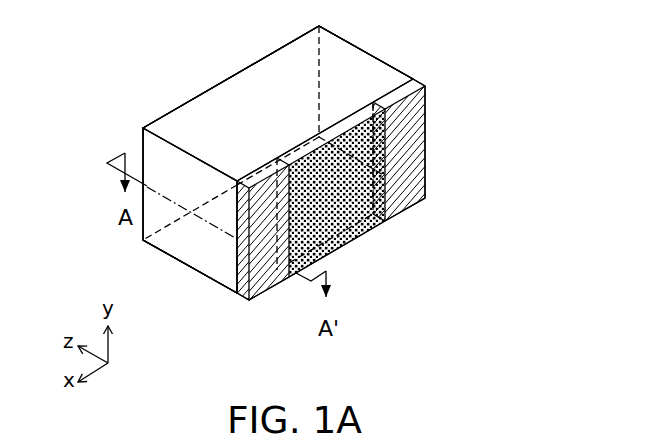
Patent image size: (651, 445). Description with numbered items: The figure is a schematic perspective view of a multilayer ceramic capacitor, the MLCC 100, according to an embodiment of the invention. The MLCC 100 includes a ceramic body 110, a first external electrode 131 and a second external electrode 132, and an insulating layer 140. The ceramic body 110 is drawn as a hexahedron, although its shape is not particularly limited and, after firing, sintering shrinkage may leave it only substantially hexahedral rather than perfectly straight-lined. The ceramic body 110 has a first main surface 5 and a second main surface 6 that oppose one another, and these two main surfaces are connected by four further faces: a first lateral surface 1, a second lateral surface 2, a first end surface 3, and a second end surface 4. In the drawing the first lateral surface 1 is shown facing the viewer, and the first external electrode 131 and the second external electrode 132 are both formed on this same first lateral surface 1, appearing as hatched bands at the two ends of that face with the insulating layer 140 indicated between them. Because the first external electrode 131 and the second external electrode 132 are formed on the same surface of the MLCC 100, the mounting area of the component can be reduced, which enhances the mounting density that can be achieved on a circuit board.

The MLCC 100 is at (82, 43).
The ceramic body 110 is at (141, 146).
The first lateral surface 1 is at (357, 219).
The second lateral surface 2 is at (192, 128).
The first end surface 3 is at (174, 240).
The second end surface 4 is at (352, 68).
The first main surface 5 is at (260, 84).
The second main surface 6 is at (222, 258).
The first external electrode 131 is at (260, 285).
The second external electrode 132 is at (424, 170).
The insulating layer 140 is at (376, 217).